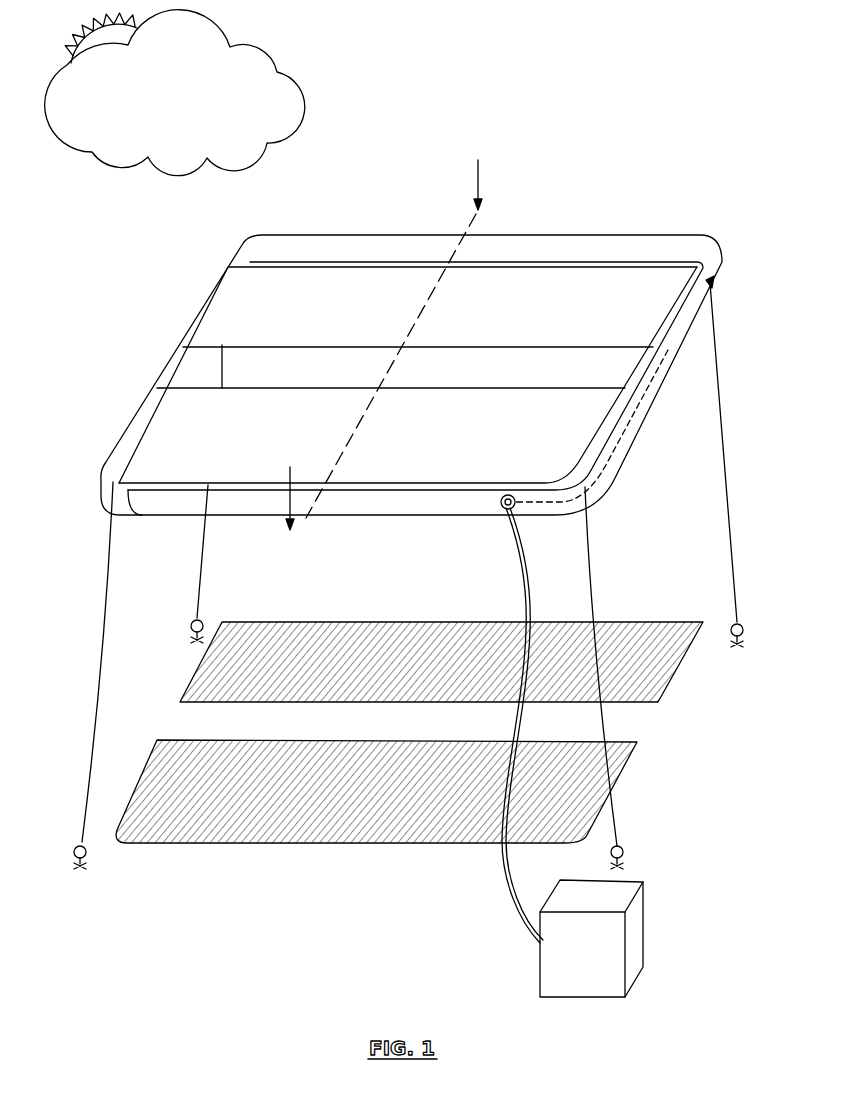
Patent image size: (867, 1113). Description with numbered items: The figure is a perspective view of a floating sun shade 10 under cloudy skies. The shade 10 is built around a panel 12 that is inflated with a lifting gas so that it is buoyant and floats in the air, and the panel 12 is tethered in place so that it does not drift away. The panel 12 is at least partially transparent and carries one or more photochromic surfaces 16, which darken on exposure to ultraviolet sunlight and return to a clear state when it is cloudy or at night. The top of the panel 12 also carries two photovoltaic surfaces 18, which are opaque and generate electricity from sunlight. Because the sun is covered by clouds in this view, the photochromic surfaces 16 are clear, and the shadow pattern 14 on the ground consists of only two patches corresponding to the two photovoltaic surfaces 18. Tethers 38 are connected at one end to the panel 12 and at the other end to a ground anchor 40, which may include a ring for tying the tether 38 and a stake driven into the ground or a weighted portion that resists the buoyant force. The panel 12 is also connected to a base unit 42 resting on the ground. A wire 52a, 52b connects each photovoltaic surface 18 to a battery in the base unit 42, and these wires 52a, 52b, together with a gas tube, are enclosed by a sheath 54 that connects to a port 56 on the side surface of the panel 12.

The floating sun shade 10 is at (435, 503).
The panel 12 is at (650, 233).
The shadow pattern 14 is at (240, 871).
The photochromic surfaces 16 is at (178, 360).
The photovoltaic surfaces 18 is at (515, 415).
The tethers 38 is at (727, 478).
The ground anchor 40 is at (742, 618).
The base unit 42 is at (633, 880).
The wire 52a is at (606, 453).
The wire 52b is at (608, 468).
The sheath 54 is at (503, 883).
The port 56 is at (500, 507).